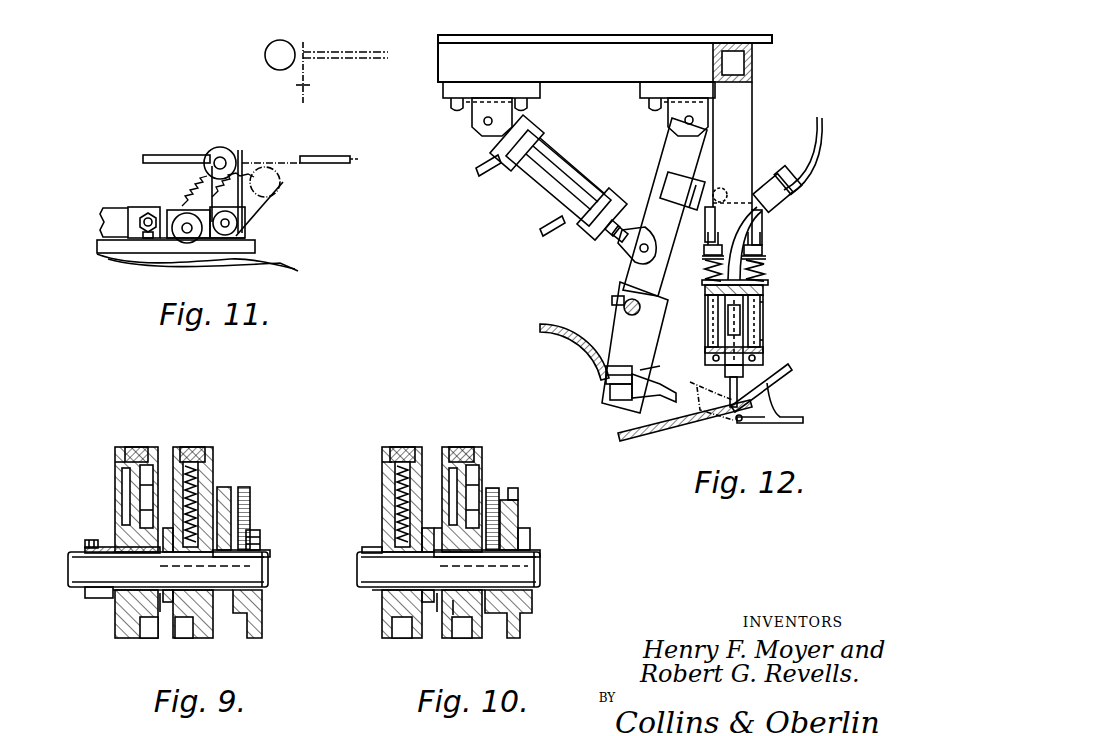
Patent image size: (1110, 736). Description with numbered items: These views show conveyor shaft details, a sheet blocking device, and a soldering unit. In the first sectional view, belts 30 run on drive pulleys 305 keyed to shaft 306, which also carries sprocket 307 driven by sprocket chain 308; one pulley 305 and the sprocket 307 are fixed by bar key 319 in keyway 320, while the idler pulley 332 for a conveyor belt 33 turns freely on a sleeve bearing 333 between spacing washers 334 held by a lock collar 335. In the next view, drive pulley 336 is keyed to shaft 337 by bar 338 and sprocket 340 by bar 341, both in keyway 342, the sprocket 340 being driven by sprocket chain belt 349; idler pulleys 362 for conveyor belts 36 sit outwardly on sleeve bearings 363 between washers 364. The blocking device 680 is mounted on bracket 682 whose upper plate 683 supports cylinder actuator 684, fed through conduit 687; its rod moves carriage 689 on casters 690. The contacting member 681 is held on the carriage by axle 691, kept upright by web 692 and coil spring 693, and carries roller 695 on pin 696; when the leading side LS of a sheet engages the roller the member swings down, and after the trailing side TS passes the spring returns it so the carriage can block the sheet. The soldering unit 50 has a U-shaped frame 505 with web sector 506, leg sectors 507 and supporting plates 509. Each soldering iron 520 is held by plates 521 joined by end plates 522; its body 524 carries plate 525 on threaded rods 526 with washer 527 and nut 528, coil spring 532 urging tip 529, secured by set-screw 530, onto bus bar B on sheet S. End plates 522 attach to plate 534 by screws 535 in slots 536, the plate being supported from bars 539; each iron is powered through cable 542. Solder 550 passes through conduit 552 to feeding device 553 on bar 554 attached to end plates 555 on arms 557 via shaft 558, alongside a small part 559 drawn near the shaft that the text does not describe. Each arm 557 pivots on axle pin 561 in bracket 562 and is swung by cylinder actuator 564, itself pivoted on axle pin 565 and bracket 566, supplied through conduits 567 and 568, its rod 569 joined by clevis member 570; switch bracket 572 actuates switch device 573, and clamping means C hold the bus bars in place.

In FIG. 11, the blocking device 680 is at (122, 172).
In FIG. 11, the contacting member 681 is at (311, 85).
In FIG. 11, the bracket 682 is at (258, 260).
In FIG. 11, the upper plate 683 is at (103, 247).
In FIG. 11, the cylinder actuator 684 is at (103, 217).
In FIG. 11, the conduit 687 is at (146, 232).
In FIG. 11, the carriage 689 is at (246, 234).
In FIG. 11, the casters 690 is at (182, 222).
In FIG. 11, the axle 691 is at (230, 222).
In FIG. 11, the web 692 is at (244, 208).
In FIG. 11, the coil spring 693 is at (200, 194).
In FIG. 11, the roller 695 is at (218, 147).
In FIG. 11, the pin 696 is at (227, 164).
In FIG. 11, the trailing side TS is at (308, 155).
In FIG. 11, the leading side LS is at (197, 150).
In FIG. 9, the conveyor belt 33 is at (128, 446).
In FIG. 10, the conveyor belt 33 is at (398, 446).
In FIG. 9, the belt 30 is at (190, 446).
In FIG. 10, the conveyor belt 36 is at (460, 446).
In FIG. 9, the drive pulley 305 is at (212, 479).
In FIG. 9, the shaft 306 is at (72, 583).
In FIG. 9, the sprocket 307 is at (256, 531).
In FIG. 9, the sprocket chain 308 is at (250, 498).
In FIG. 9, the bar key 319 is at (262, 553).
In FIG. 9, the keyway 320 is at (262, 570).
In FIG. 9, the idler pulley 332 is at (116, 470).
In FIG. 9, the sleeve bearing 333 is at (120, 605).
In FIG. 9, the spacing washers 334 is at (110, 542).
In FIG. 9, the lock collar 335 is at (86, 545).
In FIG. 10, the drive pulley 336 is at (390, 479).
In FIG. 10, the shaft 337 is at (370, 584).
In FIG. 10, the bar 338 is at (392, 548).
In FIG. 10, the sprocket 340 is at (512, 532).
In FIG. 10, the bar 341 is at (531, 554).
In FIG. 10, the keyway 342 is at (541, 566).
In FIG. 10, the sprocket chain belt 349 is at (519, 491).
In FIG. 10, the idler pulley 362 is at (470, 478).
In FIG. 10, the sleeve bearing 363 is at (455, 603).
In FIG. 10, the washers 364 is at (534, 603).
In FIG. 12, the soldering unit 50 is at (562, 292).
In FIG. 12, the frame 505 is at (555, 58).
In FIG. 12, the web sector 506 is at (755, 67).
In FIG. 12, the leg sector 507 is at (626, 66).
In FIG. 12, the plate 509 is at (695, 33).
In FIG. 12, the soldering iron 520 is at (758, 302).
In FIG. 12, the plate 521 is at (764, 353).
In FIG. 12, the end plate 522 is at (760, 336).
In FIG. 12, the cylindrical body portion 524 is at (752, 320).
In FIG. 12, the plate 525 is at (766, 284).
In FIG. 12, the threaded rod 526 is at (762, 276).
In FIG. 12, the washer 527 is at (764, 257).
In FIG. 12, the nut 528 is at (762, 248).
In FIG. 12, the tip 529 is at (775, 403).
In FIG. 12, the set-screw 530 is at (780, 373).
In FIG. 12, the coil spring 532 is at (763, 266).
In FIG. 12, the plate 534 is at (708, 361).
In FIG. 12, the screw 535 is at (722, 323).
In FIG. 12, the slot 536 is at (712, 339).
In FIG. 12, the bar 539 is at (738, 122).
In FIG. 12, the cable 542 is at (810, 160).
In FIG. 12, the solder 550 is at (700, 428).
In FIG. 12, the conduit 552 is at (570, 348).
In FIG. 12, the feeding device 553 is at (606, 380).
In FIG. 12, the bar 554 is at (625, 405).
In FIG. 12, the end plate 555 is at (622, 316).
In FIG. 12, the arm 557 is at (680, 150).
In FIG. 12, the shaft 558 is at (625, 303).
In FIG. 12, the screw 559 is at (611, 300).
In FIG. 12, the axle pin 561 is at (684, 120).
In FIG. 12, the bracket 562 is at (652, 102).
In FIG. 12, the cylinder actuator 564 is at (553, 181).
In FIG. 12, the axle pin 565 is at (484, 123).
In FIG. 12, the bracket 566 is at (480, 107).
In FIG. 12, the conduit 567 is at (478, 176).
In FIG. 12, the conduit 568 is at (546, 232).
In FIG. 12, the rod 569 is at (617, 238).
In FIG. 12, the clevis member 570 is at (632, 228).
In FIG. 12, the switch bracket 572 is at (685, 187).
In FIG. 12, the switch device 573 is at (727, 188).
In FIG. 12, the sheet S is at (642, 443).
In FIG. 12, the bus bar B is at (740, 410).
In FIG. 12, the clamping means C is at (803, 423).